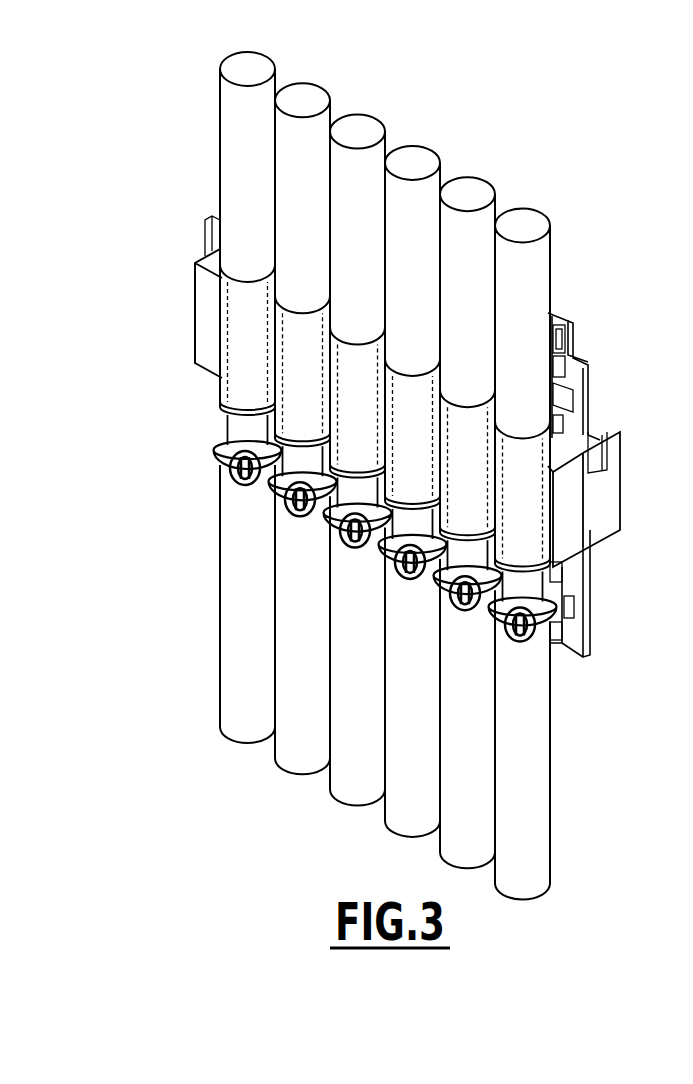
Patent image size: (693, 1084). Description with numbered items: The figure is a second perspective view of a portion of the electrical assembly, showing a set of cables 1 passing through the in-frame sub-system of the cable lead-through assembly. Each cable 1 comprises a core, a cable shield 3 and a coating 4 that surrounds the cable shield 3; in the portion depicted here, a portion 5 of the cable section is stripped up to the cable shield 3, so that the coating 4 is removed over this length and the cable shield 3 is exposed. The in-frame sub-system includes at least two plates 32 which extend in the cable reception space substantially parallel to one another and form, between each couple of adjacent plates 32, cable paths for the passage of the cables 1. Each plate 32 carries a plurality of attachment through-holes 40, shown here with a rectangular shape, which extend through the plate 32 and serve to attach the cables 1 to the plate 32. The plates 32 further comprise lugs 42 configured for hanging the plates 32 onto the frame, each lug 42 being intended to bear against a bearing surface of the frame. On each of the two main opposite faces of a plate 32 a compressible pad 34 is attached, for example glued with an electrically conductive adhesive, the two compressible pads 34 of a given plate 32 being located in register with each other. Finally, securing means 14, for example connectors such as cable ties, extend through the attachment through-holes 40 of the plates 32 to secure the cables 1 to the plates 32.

The cable 1 is at (396, 473).
The cable shield 3 is at (302, 386).
The coating 4 is at (292, 180).
The stripped portion 5 is at (396, 461).
The securing means 14 is at (508, 630).
The plate 32 is at (610, 518).
The compressible pad 34 is at (567, 508).
The attachment through-hole 40 is at (592, 384).
The lug 42 is at (220, 238).